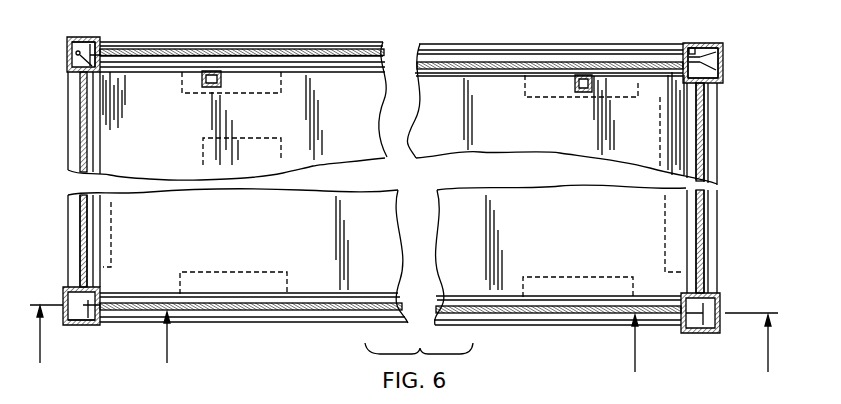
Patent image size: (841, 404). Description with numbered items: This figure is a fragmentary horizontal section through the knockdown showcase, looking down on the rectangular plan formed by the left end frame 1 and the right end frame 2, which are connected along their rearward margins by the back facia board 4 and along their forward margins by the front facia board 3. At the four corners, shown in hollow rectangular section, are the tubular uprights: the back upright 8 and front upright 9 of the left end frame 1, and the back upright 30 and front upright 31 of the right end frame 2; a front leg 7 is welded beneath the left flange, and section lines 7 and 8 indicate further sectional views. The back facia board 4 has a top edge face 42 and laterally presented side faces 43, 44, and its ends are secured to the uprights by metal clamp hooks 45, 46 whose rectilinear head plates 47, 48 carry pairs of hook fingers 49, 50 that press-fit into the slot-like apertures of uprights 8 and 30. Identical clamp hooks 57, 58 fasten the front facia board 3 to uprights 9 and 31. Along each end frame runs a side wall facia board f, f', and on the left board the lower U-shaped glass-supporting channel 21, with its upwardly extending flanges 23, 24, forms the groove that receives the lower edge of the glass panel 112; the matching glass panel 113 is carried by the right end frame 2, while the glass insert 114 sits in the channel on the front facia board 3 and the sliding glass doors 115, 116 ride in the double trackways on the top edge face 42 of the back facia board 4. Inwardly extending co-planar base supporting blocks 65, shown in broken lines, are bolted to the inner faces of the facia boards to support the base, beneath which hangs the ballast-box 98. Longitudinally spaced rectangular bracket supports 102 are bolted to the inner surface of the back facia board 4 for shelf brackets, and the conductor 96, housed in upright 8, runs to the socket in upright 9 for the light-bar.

The left end frame 1 is at (62, 285).
The right end frame 2 is at (725, 60).
The front facia board 3 is at (557, 323).
The back facia board 4 is at (323, 43).
The front leg 7 is at (101, 345).
The back upright 8 is at (67, 38).
The front upright 9 is at (85, 325).
The lower U-shaped glass-supporting channel 21 is at (93, 152).
The upwardly extending flange 23 is at (70, 165).
The upwardly extending flange 24 is at (98, 163).
The back upright 30 is at (712, 43).
The front upright 31 is at (698, 333).
The top edge face 42 is at (343, 72).
The side face 43 is at (98, 37).
The side face 44 is at (685, 55).
The clamp hook 45 is at (67, 68).
The clamp hook 46 is at (700, 62).
The head plate 47 is at (110, 62).
The head plate 48 is at (677, 63).
The hook finger 49 is at (88, 42).
The hook finger 50 is at (720, 45).
The clamp hook 57 is at (88, 322).
The clamp hook 58 is at (693, 310).
The base supporting block 65 is at (118, 125).
The conductor 96 is at (73, 51).
The ballast-box 98 is at (284, 173).
The bracket support 102 is at (222, 72).
The glass panel 112 is at (87, 220).
The glass panel 113 is at (705, 147).
The glass insert 114 is at (307, 302).
The glass door 115 is at (337, 53).
The glass door 116 is at (492, 65).
The side wall facia board f is at (62, 123).
The side wall facia board f' is at (725, 241).